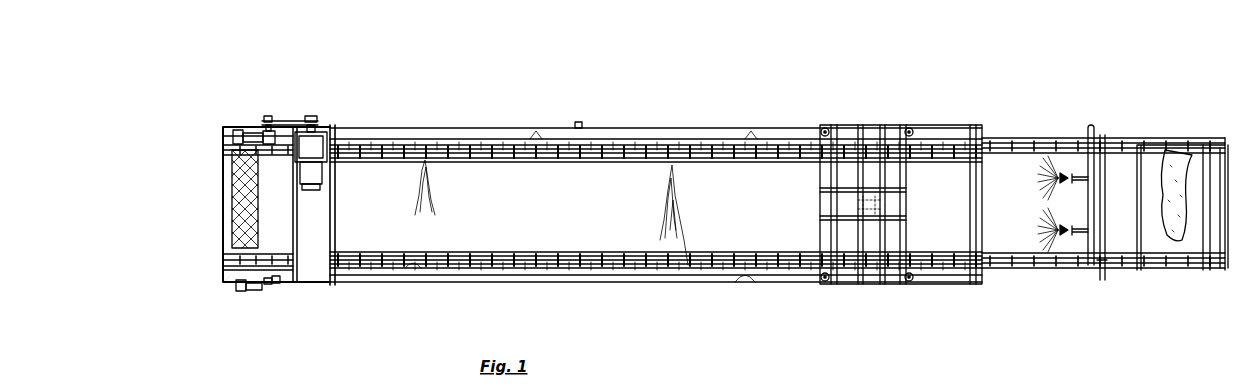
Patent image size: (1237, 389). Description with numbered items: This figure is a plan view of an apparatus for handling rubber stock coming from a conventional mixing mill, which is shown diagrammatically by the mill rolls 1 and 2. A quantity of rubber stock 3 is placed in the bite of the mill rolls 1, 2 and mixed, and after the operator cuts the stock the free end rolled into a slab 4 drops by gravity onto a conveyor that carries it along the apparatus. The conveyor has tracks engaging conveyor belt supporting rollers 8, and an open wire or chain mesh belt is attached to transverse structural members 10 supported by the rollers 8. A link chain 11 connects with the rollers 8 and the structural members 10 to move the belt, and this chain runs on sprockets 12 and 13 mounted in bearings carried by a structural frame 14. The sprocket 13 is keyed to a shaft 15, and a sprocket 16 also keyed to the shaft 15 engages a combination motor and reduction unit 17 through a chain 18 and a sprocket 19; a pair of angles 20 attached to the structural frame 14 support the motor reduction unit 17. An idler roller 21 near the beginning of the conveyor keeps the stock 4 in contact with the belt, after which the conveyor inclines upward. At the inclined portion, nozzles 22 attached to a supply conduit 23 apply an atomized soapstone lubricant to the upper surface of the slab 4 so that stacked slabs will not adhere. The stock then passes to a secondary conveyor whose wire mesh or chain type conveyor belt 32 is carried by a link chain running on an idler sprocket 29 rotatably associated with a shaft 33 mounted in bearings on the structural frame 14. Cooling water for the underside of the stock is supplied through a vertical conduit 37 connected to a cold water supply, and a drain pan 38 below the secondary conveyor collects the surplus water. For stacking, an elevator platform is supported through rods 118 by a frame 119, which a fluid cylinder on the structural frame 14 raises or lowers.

The mill roll 1 is at (1145, 155).
The mill roll 2 is at (1205, 150).
The rubber stock 3 is at (1165, 150).
The slab 4 is at (650, 238).
The conveyor belt supporting roller 8 is at (488, 265).
The transverse structural member 10 is at (575, 263).
The link chain 11 is at (418, 268).
The sprocket 12 is at (1222, 272).
The sprocket 13 is at (276, 284).
The structural frame 14 is at (762, 272).
The shaft 15 is at (268, 284).
The sprocket 16 is at (268, 122).
The combination motor and reduction unit 17 is at (318, 150).
The chain 18 is at (287, 120).
The sprocket 19 is at (318, 125).
The angle 20 is at (333, 243).
The idler roller 21 is at (1105, 242).
The nozzle 22 is at (1072, 230).
The supply conduit 23 is at (1090, 160).
The sprocket 29 is at (228, 278).
The conveyor belt 32 is at (248, 224).
The shaft 33 is at (240, 286).
The vertical conduit 37 is at (578, 122).
The drain pan 38 is at (223, 190).
The rod 118 is at (913, 282).
The frame 119 is at (905, 170).